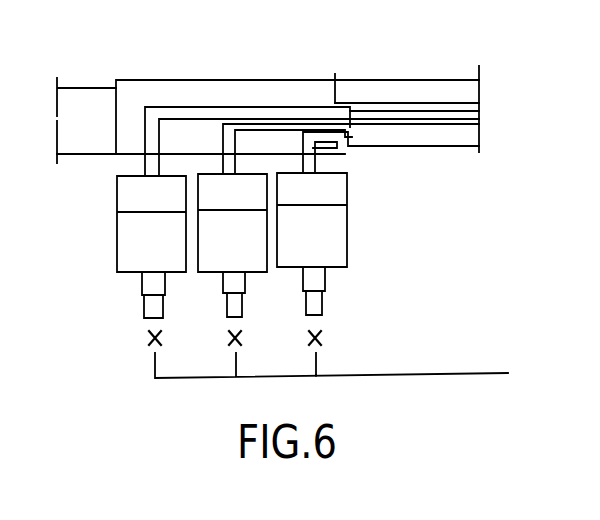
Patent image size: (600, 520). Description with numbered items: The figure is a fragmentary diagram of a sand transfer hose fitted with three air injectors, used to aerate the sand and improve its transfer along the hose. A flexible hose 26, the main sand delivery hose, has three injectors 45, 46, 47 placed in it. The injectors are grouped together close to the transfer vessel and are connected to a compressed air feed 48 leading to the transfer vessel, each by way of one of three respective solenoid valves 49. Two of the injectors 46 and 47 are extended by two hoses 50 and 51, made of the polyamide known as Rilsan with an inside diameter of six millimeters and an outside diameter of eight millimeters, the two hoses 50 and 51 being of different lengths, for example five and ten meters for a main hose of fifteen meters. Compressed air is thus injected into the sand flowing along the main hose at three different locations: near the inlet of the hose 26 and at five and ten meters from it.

The flexible hose 26 is at (354, 81).
The injector 45 is at (340, 148).
The injector 46 is at (268, 100).
The injector 47 is at (198, 94).
The compressed air feed 48 is at (432, 375).
The solenoid valve 49 is at (349, 236).
The hose 50 is at (394, 94).
The hose 51 is at (424, 101).